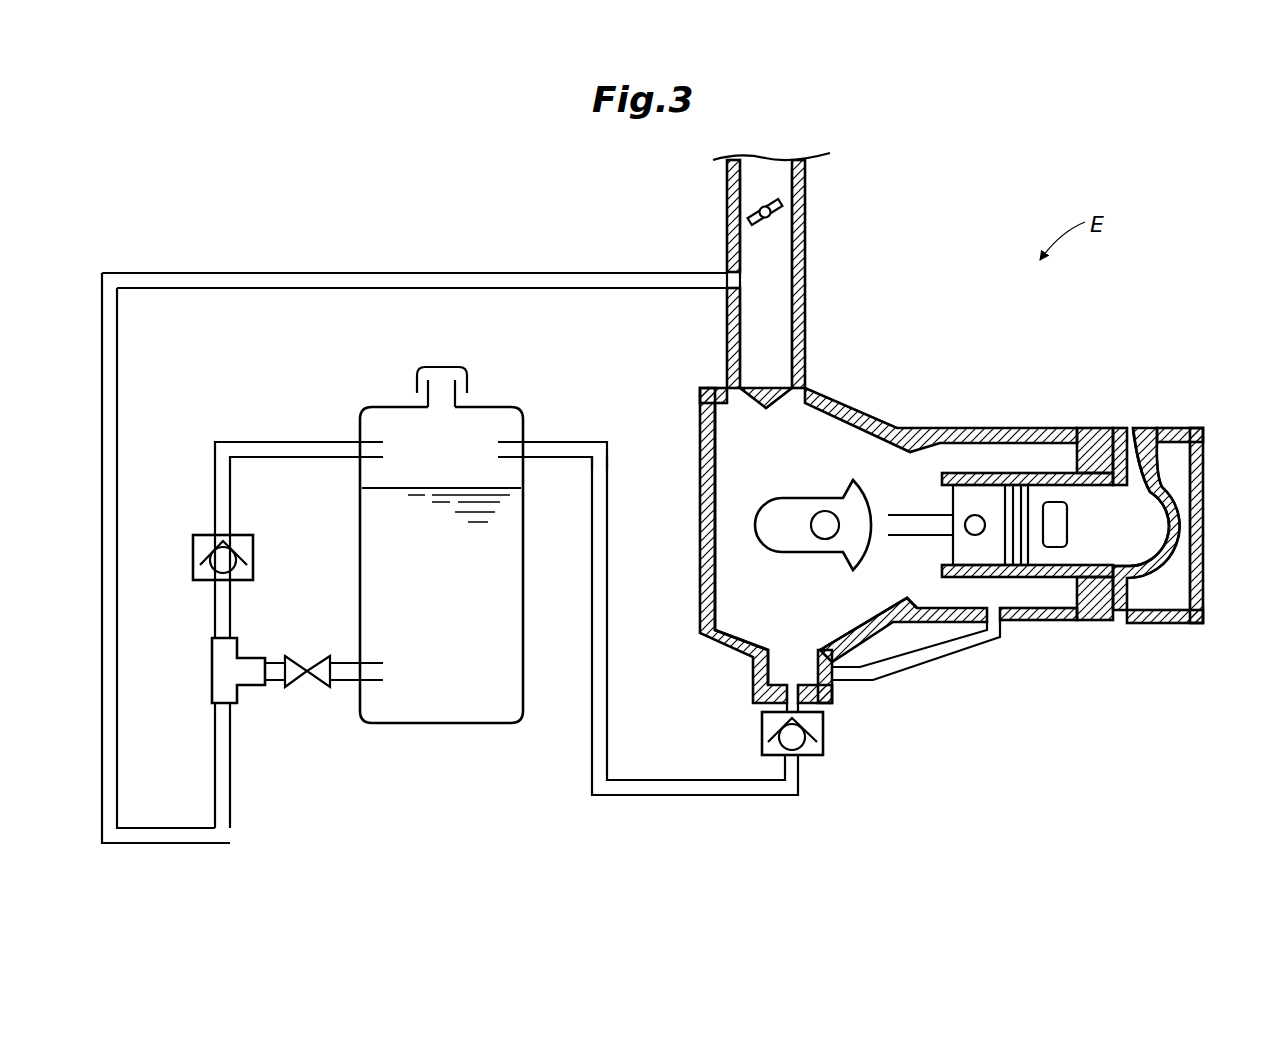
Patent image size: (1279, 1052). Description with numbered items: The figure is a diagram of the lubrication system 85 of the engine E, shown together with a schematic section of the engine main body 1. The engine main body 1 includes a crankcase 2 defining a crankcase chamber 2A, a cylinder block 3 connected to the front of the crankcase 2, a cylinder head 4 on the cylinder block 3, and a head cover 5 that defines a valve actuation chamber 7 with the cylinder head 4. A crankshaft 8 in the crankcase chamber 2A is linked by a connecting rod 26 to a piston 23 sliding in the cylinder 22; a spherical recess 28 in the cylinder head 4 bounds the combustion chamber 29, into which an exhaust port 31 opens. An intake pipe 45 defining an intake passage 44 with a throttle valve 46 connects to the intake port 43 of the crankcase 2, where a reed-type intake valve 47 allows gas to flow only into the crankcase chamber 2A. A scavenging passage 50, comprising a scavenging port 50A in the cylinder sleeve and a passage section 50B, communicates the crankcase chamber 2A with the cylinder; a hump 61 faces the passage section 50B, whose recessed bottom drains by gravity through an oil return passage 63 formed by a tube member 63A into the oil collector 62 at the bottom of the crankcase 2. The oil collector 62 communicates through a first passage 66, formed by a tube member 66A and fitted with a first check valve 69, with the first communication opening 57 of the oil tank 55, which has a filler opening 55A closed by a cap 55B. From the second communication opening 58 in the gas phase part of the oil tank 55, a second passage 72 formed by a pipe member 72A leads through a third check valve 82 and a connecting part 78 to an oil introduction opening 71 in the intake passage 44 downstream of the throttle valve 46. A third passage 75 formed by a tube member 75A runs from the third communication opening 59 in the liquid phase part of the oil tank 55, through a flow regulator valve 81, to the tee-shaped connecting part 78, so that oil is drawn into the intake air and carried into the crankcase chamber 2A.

The engine main body 1 is at (1064, 420).
The crankcase 2 is at (700, 510).
The crankcase chamber 2A is at (741, 544).
The cylinder block 3 is at (1095, 622).
The cylinder head 4 is at (1135, 622).
The head cover 5 is at (1195, 623).
The valve actuation chamber 7 is at (1158, 526).
The crankshaft 8 is at (825, 510).
The cylinder 22 is at (952, 556).
The piston 23 is at (977, 490).
The connecting rod 26 is at (905, 520).
The spherical recess 28 is at (1168, 522).
The combustion chamber 29 is at (1130, 529).
The exhaust port 31 is at (1145, 430).
The intake port 43 is at (745, 403).
The intake passage 44 is at (792, 268).
The intake pipe 45 is at (805, 215).
The throttle valve 46 is at (752, 215).
The intake valve 47 is at (772, 405).
The scavenging passage 50 is at (1010, 430).
The scavenging port 50A is at (1065, 510).
The passage section 50B is at (1055, 622).
The oil tank 55 is at (447, 725).
The filler opening 55A is at (440, 385).
The cap 55B is at (470, 381).
The first communication opening 57 is at (523, 443).
The second communication opening 58 is at (360, 443).
The third communication opening 59 is at (350, 662).
The hump 61 is at (900, 602).
The oil collector 62 is at (770, 665).
The oil return passage 63 is at (912, 666).
The tube member 63A is at (960, 640).
The first passage 66 is at (662, 796).
The tube member 66A is at (740, 796).
The first check valve 69 is at (823, 738).
The oil introduction opening 71 is at (727, 272).
The second passage 72 is at (243, 272).
The pipe member 72A is at (348, 272).
The third passage 75 is at (342, 682).
The tube member 75A is at (272, 682).
The connecting part 78 is at (215, 672).
The flow regulator valve 81 is at (305, 662).
The third check valve 82 is at (253, 553).
The lubrication system 85 is at (512, 268).